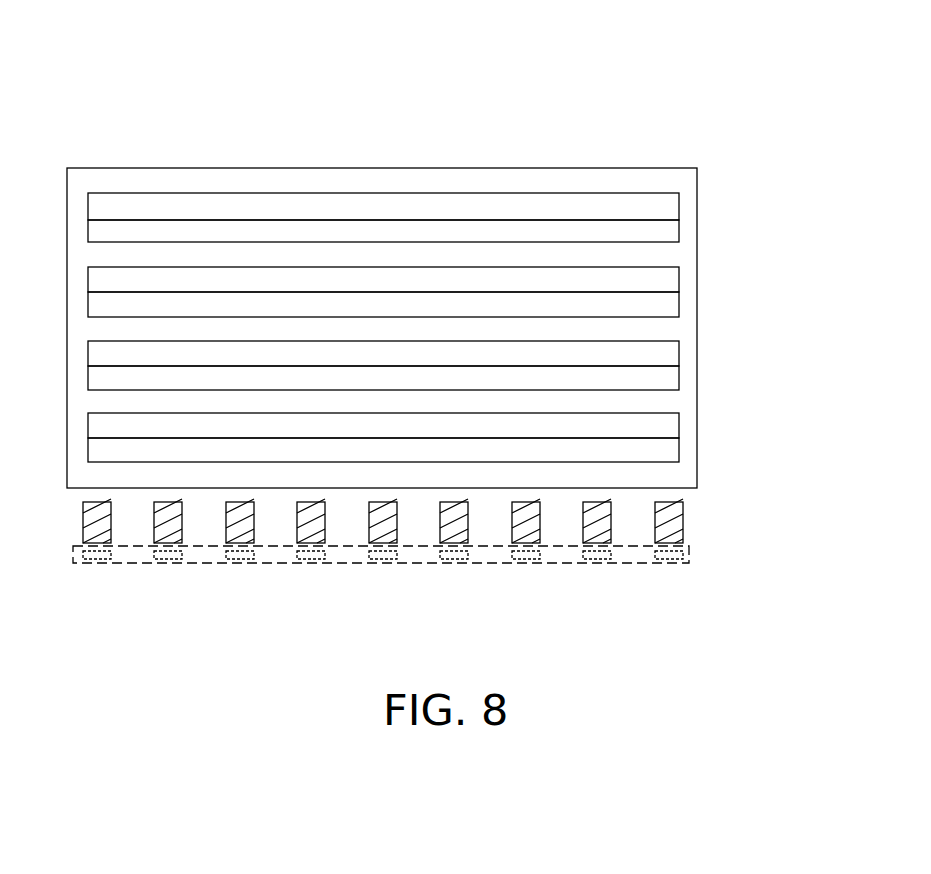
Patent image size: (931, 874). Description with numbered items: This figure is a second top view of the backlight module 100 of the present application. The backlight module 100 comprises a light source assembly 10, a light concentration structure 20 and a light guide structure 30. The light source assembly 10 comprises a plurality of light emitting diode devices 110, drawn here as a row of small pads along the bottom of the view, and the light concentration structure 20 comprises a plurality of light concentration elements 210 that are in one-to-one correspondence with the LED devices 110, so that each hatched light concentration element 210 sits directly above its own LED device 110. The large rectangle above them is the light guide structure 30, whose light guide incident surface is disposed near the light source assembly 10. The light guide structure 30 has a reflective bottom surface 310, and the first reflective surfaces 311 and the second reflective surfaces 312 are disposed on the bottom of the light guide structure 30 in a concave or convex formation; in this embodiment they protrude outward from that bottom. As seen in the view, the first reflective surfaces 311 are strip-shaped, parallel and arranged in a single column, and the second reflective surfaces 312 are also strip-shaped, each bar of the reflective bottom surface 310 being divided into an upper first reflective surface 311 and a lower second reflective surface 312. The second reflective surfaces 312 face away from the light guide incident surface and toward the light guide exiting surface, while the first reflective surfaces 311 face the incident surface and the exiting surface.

The backlight module 100 is at (184, 141).
The light guide structure 30 is at (697, 419).
The reflective bottom surface 310 is at (383, 237).
The first reflective surfaces 311 is at (393, 207).
The second reflective surfaces 312 is at (385, 77).
The light concentration structure 20 is at (438, 570).
The light concentration elements 210 is at (368, 522).
The light source assembly 10 is at (620, 562).
The light emitting diode (LED) devices 110 is at (525, 555).